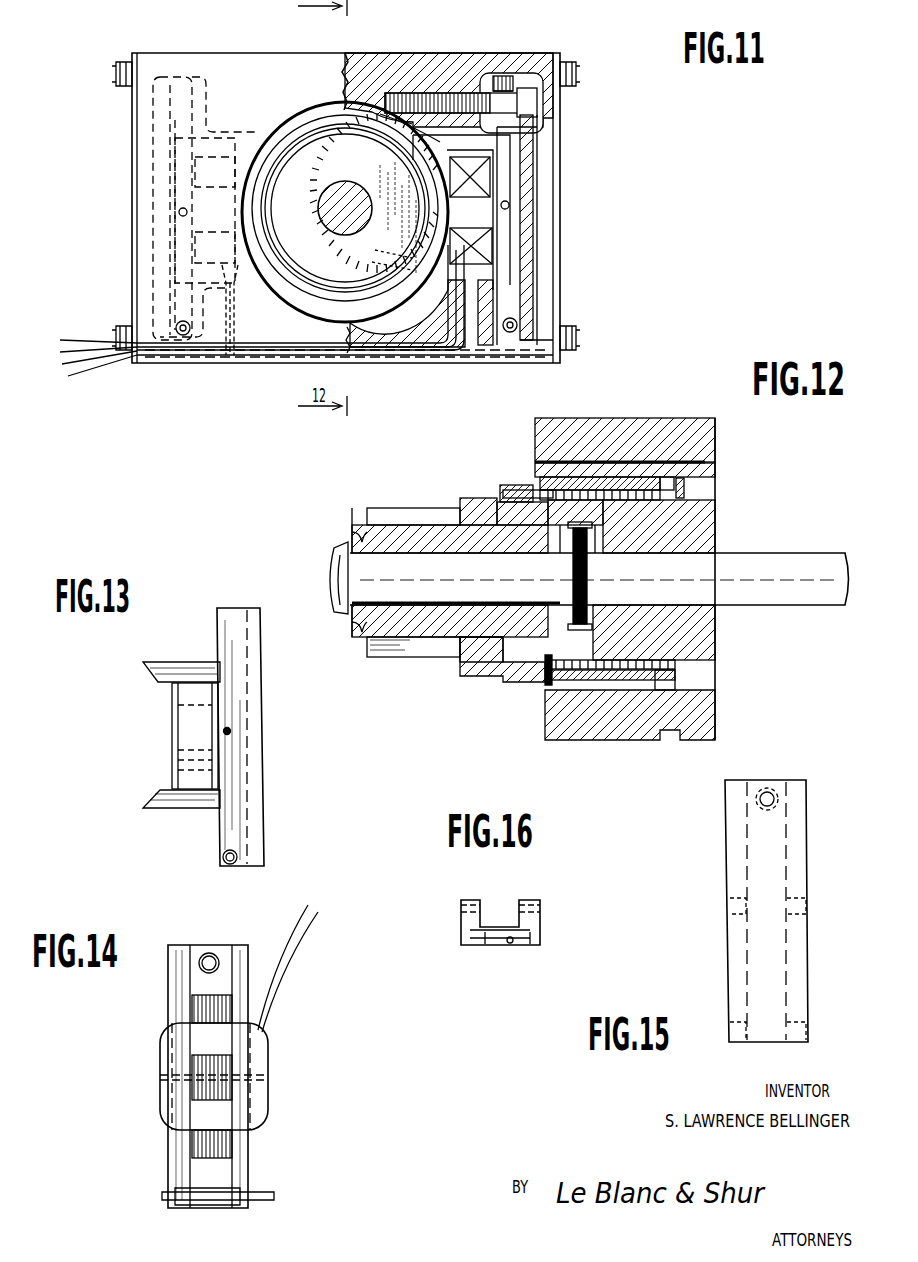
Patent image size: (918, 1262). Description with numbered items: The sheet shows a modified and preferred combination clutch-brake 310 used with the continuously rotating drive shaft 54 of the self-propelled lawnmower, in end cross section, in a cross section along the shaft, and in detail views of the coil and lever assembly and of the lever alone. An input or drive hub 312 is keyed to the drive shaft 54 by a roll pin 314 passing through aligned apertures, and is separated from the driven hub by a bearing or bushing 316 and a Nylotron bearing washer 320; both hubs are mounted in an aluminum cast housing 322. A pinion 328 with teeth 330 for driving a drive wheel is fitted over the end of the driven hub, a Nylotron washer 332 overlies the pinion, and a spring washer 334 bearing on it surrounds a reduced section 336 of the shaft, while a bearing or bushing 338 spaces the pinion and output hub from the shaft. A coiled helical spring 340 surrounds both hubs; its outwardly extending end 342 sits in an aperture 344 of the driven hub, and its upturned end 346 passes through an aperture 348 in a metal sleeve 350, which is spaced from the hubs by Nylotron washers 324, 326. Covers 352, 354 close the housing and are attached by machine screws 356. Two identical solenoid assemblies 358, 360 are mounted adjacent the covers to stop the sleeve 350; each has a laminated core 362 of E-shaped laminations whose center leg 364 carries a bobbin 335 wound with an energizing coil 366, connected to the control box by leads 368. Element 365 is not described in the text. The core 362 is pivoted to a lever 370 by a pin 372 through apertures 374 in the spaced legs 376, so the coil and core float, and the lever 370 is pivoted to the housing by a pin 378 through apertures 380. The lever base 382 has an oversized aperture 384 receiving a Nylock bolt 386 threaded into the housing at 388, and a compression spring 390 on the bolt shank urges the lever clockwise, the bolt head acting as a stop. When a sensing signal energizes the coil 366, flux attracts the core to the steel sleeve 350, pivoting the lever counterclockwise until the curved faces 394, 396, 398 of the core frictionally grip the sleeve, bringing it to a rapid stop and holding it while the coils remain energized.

In FIG. 11, the drive shaft 54 is at (320, 198).
In FIG. 12, the drive shaft 54 is at (790, 553).
In FIG. 11, the combination clutch-brake 310 is at (270, 44).
In FIG. 12, the combination clutch-brake 310 is at (461, 458).
In FIG. 12, the drive hub 312 is at (716, 522).
In FIG. 12, the roll pin 314 is at (608, 690).
In FIG. 12, the bearing or bushing 316 is at (560, 470).
In FIG. 12, the bearing washer 320 is at (603, 480).
In FIG. 11, the housing 322 is at (372, 70).
In FIG. 12, the housing 322 is at (700, 418).
In FIG. 12, the Nylotron washer 324 is at (680, 662).
In FIG. 12, the Nylotron washer 326 is at (530, 668).
In FIG. 12, the pinion 328 is at (466, 500).
In FIG. 12, the teeth 330 is at (380, 520).
In FIG. 12, the Nylotron washer 332 is at (353, 538).
In FIG. 12, the spring washer 334 is at (334, 562).
In FIG. 13, the spool or bobbin 335 is at (176, 714).
In FIG. 14, the spool or bobbin 335 is at (165, 1096).
In FIG. 12, the reduced section 336 is at (348, 614).
In FIG. 12, the bearing or bushing 338 is at (420, 620).
In FIG. 12, the coiled helical spring 340 is at (642, 470).
In FIG. 12, the outwardly extending end 342 is at (498, 492).
In FIG. 12, the aperture 344 is at (520, 489).
In FIG. 12, the upturned end 346 is at (685, 486).
In FIG. 12, the aperture 348 is at (665, 480).
In FIG. 11, the sleeve 350 is at (321, 112).
In FIG. 12, the sleeve 350 is at (665, 682).
In FIG. 11, the cover 352 is at (133, 217).
In FIG. 11, the cover 354 is at (560, 154).
In FIG. 11, the machine screws 356 is at (116, 77).
In FIG. 11, the solenoid assembly 358 is at (192, 44).
In FIG. 11, the solenoid assembly 360 is at (572, 289).
In FIG. 11, the laminated core 362 is at (500, 244).
In FIG. 13, the laminated core 362 is at (170, 672).
In FIG. 14, the laminated core 362 is at (205, 1146).
In FIG. 11, the center leg 364 is at (510, 206).
In FIG. 14, the magnet 365 is at (258, 1100).
In FIG. 11, the electrical coil 366 is at (497, 180).
In FIG. 13, the electrical coil 366 is at (190, 757).
In FIG. 11, the electrical leads 368 is at (87, 364).
In FIG. 14, the electrical leads 368 is at (300, 947).
In FIG. 11, the lever 370 is at (530, 322).
In FIG. 13, the lever 370 is at (255, 727).
In FIG. 14, the lever 370 is at (178, 994).
In FIG. 15, the lever 370 is at (734, 870).
In FIG. 16, the lever 370 is at (463, 932).
In FIG. 11, the pin 372 is at (510, 207).
In FIG. 13, the pin 372 is at (232, 733).
In FIG. 14, the pin 372 is at (260, 1066).
In FIG. 15, the apertures 374 is at (740, 907).
In FIG. 16, the spaced legs 376 is at (524, 897).
In FIG. 11, the pin 378 is at (505, 332).
In FIG. 13, the pin 378 is at (223, 860).
In FIG. 14, the pin 378 is at (262, 1192).
In FIG. 15, the apertures 380 is at (740, 1030).
In FIG. 11, the lever base 382 is at (518, 332).
In FIG. 15, the lever base 382 is at (770, 845).
In FIG. 16, the lever base 382 is at (490, 945).
In FIG. 15, the aperture 384 is at (772, 790).
In FIG. 16, the aperture 384 is at (510, 944).
In FIG. 11, the Nylock bolt 386 is at (522, 73).
In FIG. 11, the threaded portion of housing 388 is at (455, 93).
In FIG. 11, the compression spring 390 is at (475, 92).
In FIG. 11, the curved face 394 is at (418, 142).
In FIG. 11, the curved face 396 is at (437, 208).
In FIG. 11, the curved face 398 is at (412, 264).